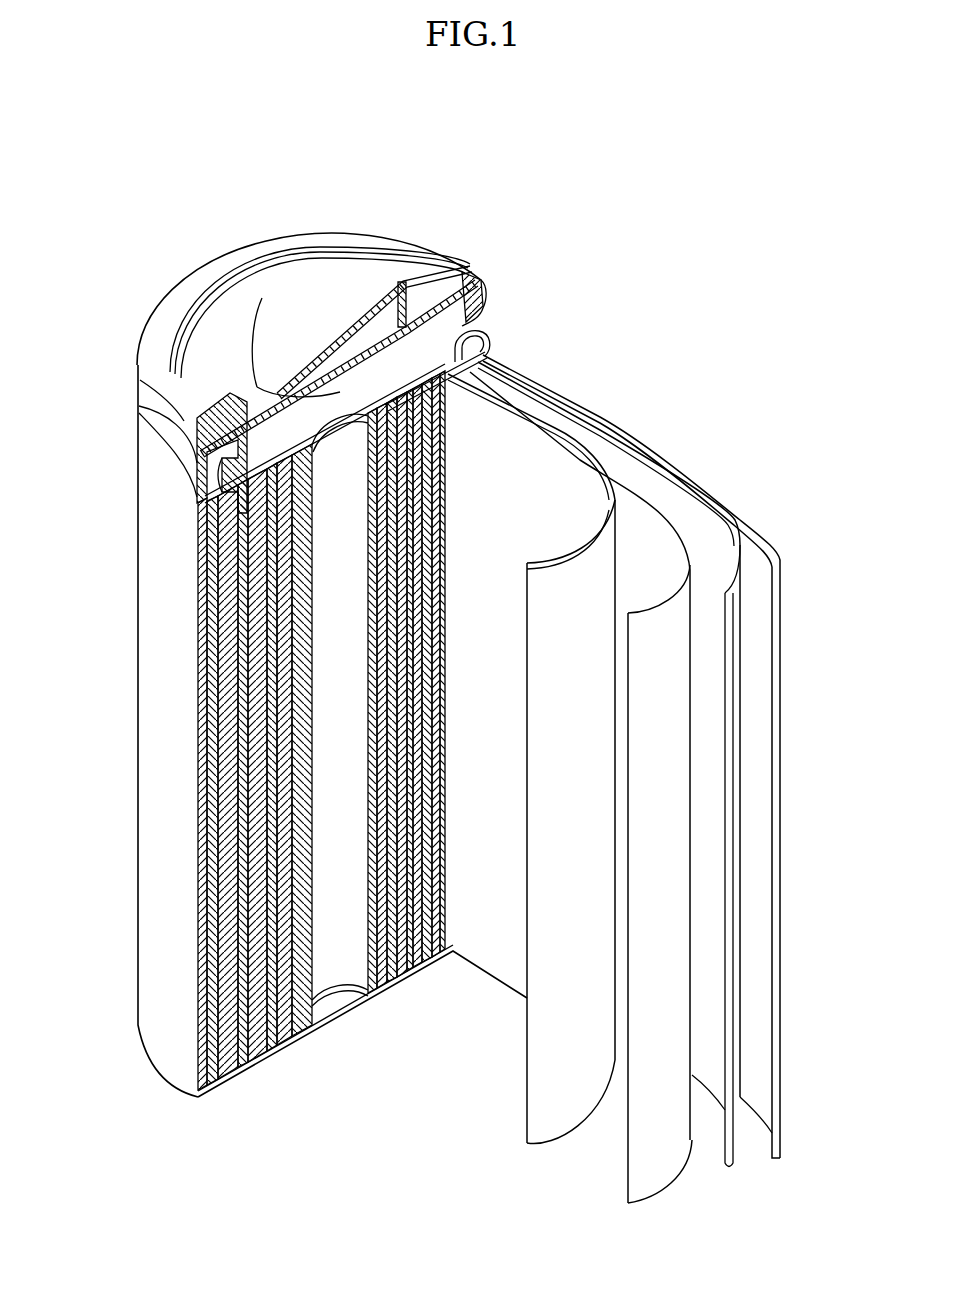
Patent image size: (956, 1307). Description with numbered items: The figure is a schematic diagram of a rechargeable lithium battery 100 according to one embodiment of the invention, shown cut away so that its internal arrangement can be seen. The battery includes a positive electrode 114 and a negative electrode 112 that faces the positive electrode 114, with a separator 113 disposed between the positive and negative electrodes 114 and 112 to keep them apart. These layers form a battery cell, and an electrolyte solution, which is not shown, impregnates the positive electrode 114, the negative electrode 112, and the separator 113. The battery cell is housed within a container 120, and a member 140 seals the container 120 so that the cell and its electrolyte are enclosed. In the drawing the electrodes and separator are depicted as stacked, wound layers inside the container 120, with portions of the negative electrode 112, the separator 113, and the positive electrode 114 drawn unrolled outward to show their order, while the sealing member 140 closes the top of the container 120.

The rechargeable lithium battery 100 is at (548, 215).
The negative electrode 112 is at (780, 563).
The separator 113 is at (564, 449).
The positive electrode 114 is at (655, 508).
The container 120 is at (152, 668).
The sealing member 140 is at (277, 300).